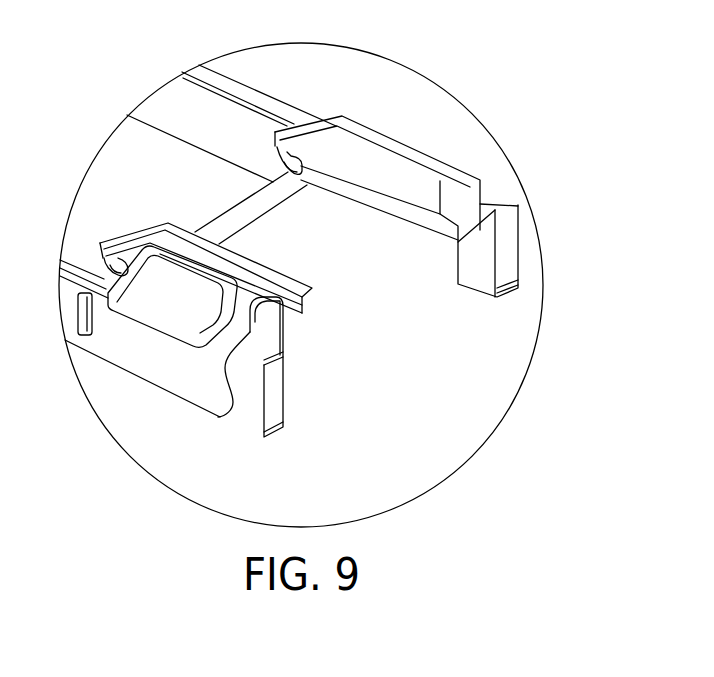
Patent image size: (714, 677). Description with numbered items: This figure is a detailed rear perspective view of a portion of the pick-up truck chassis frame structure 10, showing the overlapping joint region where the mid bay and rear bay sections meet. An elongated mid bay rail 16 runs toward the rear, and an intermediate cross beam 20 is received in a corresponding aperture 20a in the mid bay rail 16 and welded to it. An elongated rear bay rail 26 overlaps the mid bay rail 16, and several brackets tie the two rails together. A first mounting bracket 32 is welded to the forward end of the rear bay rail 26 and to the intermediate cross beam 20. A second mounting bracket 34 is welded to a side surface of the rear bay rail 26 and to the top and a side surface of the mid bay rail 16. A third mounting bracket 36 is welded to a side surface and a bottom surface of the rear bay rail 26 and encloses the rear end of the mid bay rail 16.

The pick-up truck chassis frame structure 10 is at (497, 94).
The elongated mid bay rail 16 is at (258, 92).
The intermediate cross beam 20 is at (267, 207).
The aperture 20a is at (79, 313).
The elongated rear bay rail 26 is at (457, 176).
The first mounting bracket 32 is at (273, 163).
The second mounting bracket 34 is at (194, 294).
The third mounting bracket 36 is at (261, 333).